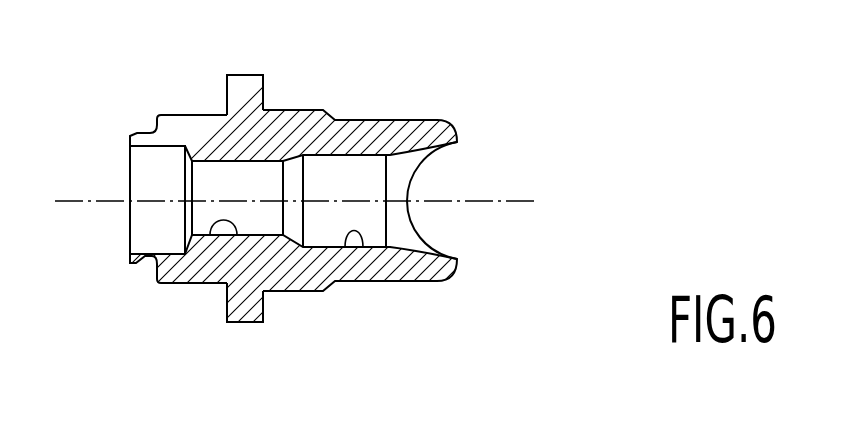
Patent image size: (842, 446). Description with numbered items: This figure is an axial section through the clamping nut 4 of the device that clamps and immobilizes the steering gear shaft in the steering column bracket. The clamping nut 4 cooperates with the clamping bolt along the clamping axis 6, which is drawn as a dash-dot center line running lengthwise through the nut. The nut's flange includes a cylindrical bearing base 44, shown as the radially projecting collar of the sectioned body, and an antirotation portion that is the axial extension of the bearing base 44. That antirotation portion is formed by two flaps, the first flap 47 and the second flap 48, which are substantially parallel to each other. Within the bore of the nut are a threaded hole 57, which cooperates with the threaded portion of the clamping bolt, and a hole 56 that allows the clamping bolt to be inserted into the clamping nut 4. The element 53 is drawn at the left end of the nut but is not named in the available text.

The clamping nut 4 is at (372, 100).
The clamping axis 6 is at (503, 200).
The cylindrical bearing base 44 is at (250, 75).
The first flap 47 is at (218, 283).
The second flap 48 is at (192, 115).
The sleeve 53 is at (129, 175).
The hole 56 is at (353, 239).
The threaded hole 57 is at (209, 236).